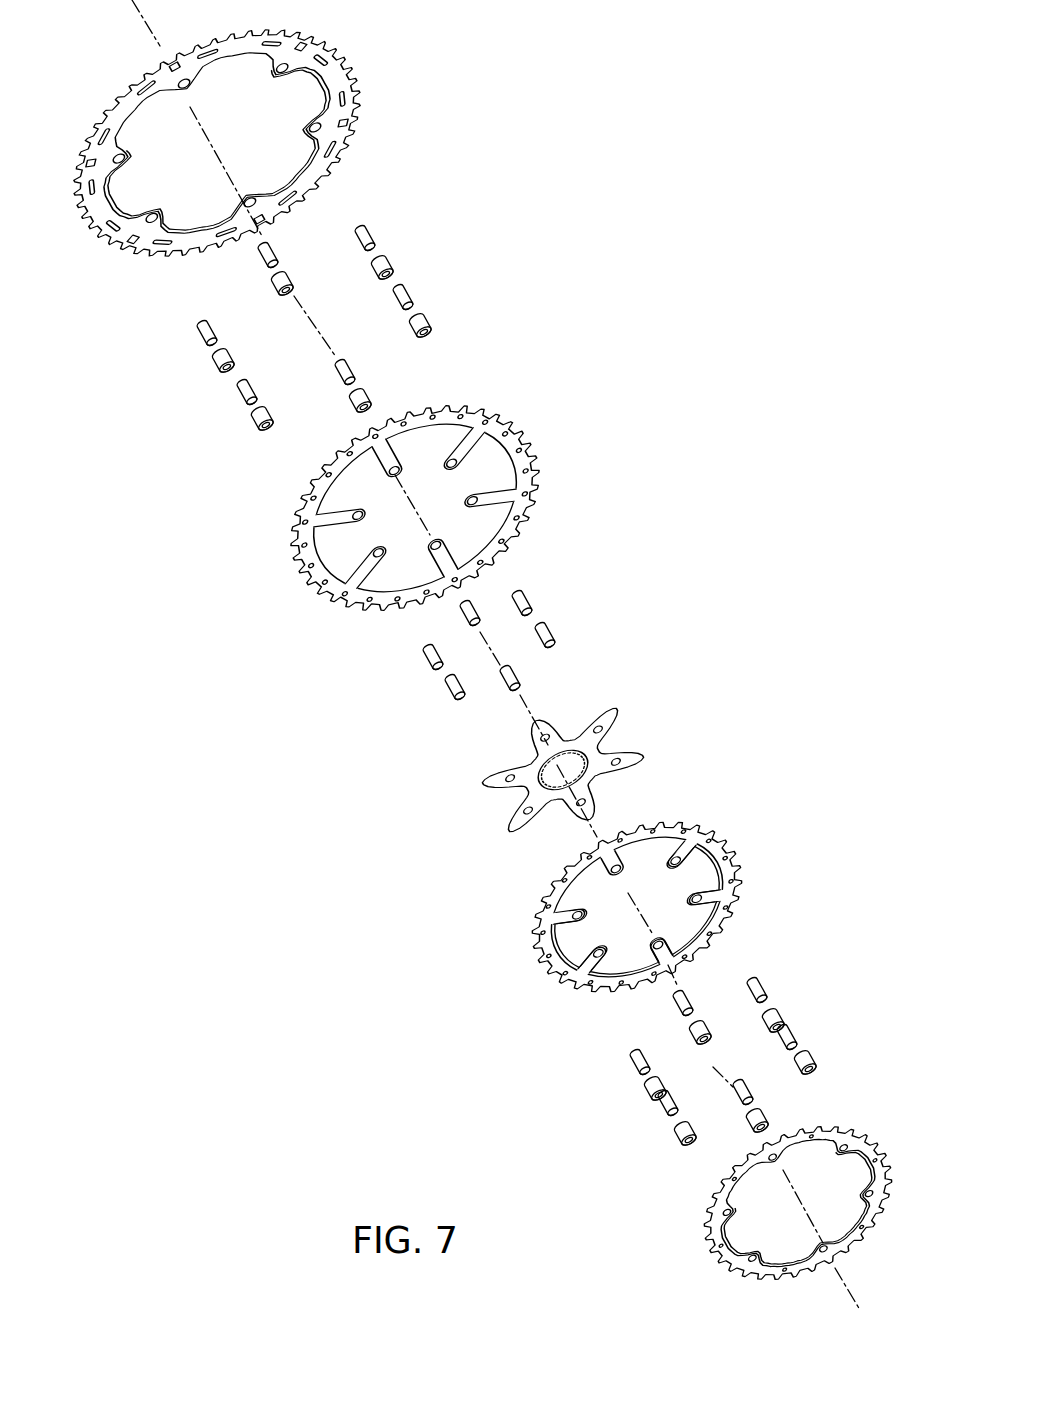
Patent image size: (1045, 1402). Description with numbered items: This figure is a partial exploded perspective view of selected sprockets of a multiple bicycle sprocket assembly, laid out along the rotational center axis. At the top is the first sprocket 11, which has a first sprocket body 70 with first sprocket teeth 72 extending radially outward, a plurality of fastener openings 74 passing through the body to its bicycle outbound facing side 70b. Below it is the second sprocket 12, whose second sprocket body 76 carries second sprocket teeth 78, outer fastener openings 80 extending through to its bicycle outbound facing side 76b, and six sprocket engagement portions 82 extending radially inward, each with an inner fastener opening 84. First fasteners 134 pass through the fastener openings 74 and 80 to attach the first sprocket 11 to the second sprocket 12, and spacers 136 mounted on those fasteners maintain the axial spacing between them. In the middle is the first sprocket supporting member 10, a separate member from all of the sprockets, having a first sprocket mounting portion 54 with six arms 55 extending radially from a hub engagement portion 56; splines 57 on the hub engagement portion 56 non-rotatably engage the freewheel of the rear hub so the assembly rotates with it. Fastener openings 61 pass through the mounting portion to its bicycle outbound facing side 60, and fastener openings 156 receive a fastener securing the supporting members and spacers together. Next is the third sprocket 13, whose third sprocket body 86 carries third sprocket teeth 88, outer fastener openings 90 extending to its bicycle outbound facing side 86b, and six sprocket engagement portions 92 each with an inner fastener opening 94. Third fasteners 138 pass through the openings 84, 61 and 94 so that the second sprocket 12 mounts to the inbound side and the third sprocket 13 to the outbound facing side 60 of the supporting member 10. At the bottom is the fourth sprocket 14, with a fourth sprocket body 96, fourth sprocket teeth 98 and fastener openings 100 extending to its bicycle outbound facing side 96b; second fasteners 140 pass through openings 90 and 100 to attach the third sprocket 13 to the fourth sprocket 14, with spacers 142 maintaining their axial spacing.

The first sprocket 11 is at (221, 151).
The first sprocket body 70 is at (318, 89).
The first sprocket teeth 72 is at (345, 138).
The fastener openings 74 is at (122, 165).
The bicycle outbound facing side 70b is at (305, 172).
The first fastener 134 is at (375, 232).
The spacer 136 is at (432, 320).
The bicycle outbound facing side 76b is at (462, 410).
The second sprocket 12 is at (417, 507).
The second sprocket teeth 78 is at (531, 455).
The second sprocket body 76 is at (519, 500).
The outer fastener openings 80 is at (300, 508).
The sprocket engagement portions 82 is at (300, 568).
The inner fastener opening 84 is at (387, 557).
The third fastener 138 is at (533, 597).
The first sprocket mounting portion 54 is at (603, 717).
The spline 57 is at (570, 755).
The first sprocket supporting member 10 is at (562, 775).
The hub engagement portion 56 is at (532, 758).
The fastener openings 156 is at (500, 771).
The arms 55 is at (615, 783).
The bicycle outbound facing side 60 is at (505, 795).
The fastener openings 61 is at (533, 830).
The third sprocket teeth 88 is at (692, 824).
The third sprocket body 86 is at (732, 872).
The outer fastener openings 90 is at (712, 928).
The sprocket engagement portions 92 is at (594, 942).
The bicycle outbound facing side 86b is at (545, 952).
The third sprocket 13 is at (630, 906).
The inner fastener opening 94 is at (632, 978).
The second fastener 140 is at (770, 985).
The spacer 142 is at (814, 1058).
The fourth sprocket body 96 is at (872, 1150).
The fastener openings 100 is at (865, 1193).
The fourth sprocket 14 is at (783, 1203).
The bicycle outbound facing side 96b is at (720, 1250).
The fourth sprocket teeth 98 is at (752, 1272).